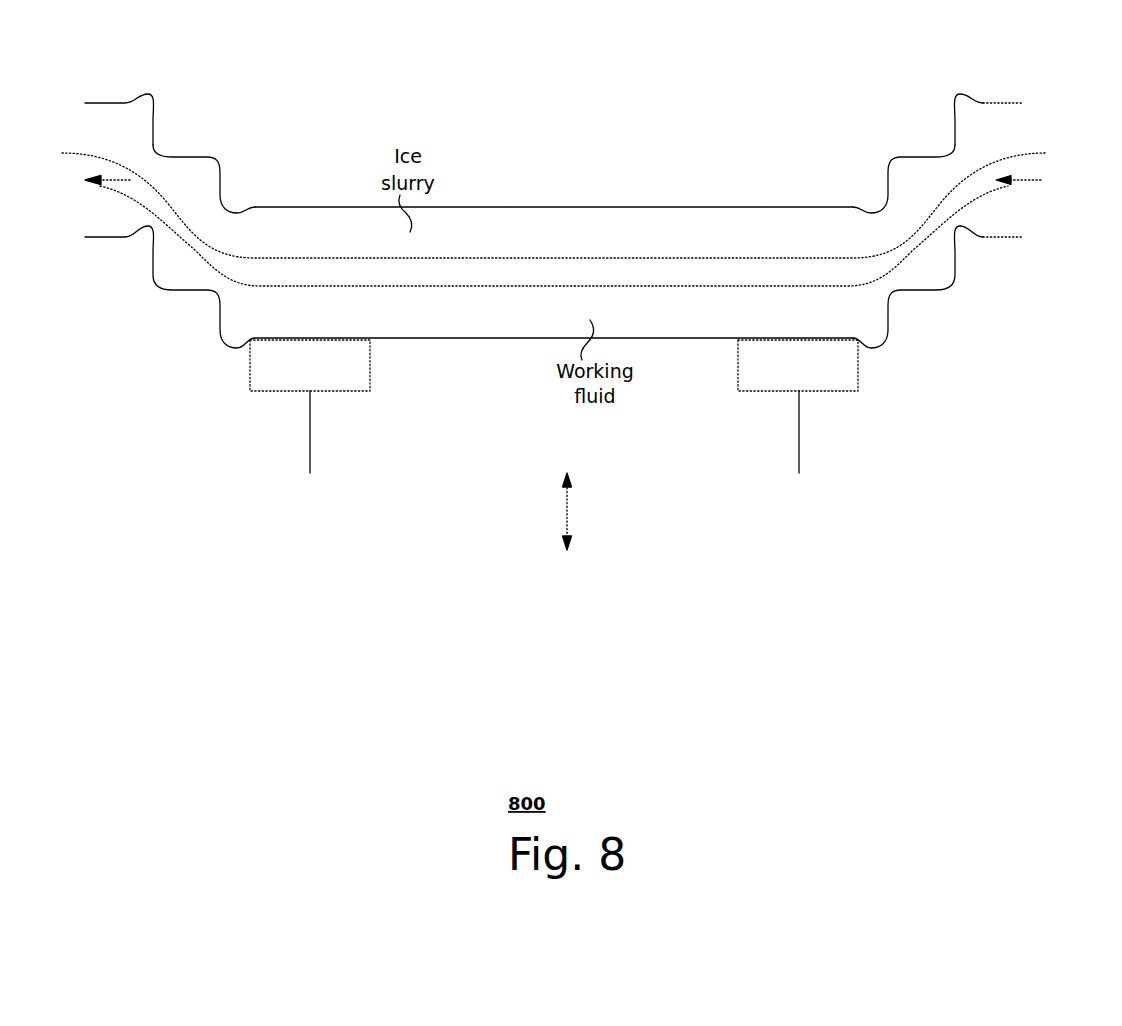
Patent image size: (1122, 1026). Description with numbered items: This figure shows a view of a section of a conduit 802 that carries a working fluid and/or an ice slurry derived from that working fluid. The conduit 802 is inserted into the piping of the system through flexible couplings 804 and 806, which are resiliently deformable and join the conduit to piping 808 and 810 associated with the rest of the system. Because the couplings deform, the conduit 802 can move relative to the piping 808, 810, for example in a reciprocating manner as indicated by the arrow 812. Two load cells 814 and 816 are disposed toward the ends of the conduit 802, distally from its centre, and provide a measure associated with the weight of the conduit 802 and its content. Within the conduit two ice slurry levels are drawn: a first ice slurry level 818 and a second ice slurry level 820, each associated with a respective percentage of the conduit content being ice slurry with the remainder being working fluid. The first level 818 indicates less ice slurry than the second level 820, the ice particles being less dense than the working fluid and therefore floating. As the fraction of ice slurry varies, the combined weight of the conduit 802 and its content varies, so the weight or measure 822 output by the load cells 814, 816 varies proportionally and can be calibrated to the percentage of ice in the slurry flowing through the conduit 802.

The conduit 802 is at (549, 207).
The flexible coupling 804 is at (224, 157).
The flexible coupling 806 is at (896, 157).
The piping 808 is at (108, 103).
The piping 810 is at (1008, 103).
The arrow 812 is at (562, 508).
The load cell 814 is at (372, 392).
The load cell 816 is at (740, 372).
The first ice slurry level 818 is at (612, 258).
The second ice slurry level 820 is at (515, 286).
The weight or measure 822 is at (554, 450).